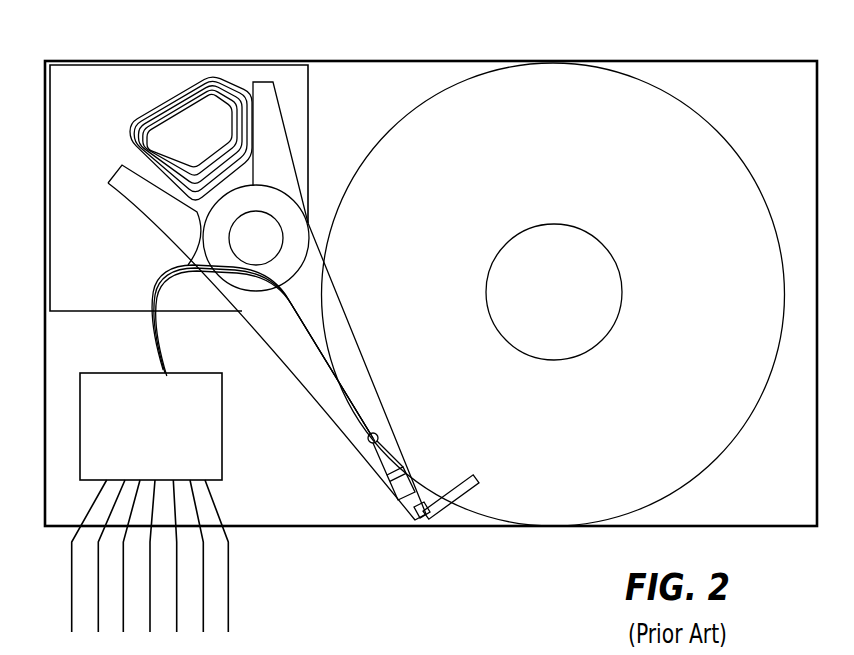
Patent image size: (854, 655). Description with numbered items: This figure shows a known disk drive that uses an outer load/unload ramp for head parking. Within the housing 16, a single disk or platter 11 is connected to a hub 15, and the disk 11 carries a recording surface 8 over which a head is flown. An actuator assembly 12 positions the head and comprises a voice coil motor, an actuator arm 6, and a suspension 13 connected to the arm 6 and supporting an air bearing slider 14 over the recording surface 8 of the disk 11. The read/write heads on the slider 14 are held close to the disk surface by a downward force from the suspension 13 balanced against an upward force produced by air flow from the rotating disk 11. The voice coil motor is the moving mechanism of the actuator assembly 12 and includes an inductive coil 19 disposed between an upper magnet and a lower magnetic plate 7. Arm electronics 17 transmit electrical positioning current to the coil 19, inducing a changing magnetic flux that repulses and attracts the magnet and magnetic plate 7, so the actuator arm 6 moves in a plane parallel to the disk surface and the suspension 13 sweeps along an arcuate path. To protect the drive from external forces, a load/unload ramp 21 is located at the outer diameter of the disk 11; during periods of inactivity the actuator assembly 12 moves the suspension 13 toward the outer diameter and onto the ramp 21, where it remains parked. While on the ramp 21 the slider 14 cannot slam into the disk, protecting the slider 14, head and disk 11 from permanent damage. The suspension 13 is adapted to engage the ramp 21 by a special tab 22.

The actuator arm 6 is at (278, 143).
The lower magnetic plate 7 is at (91, 264).
The recording surface 8 is at (553, 294).
The disk 11 is at (727, 142).
The actuator assembly 12 is at (279, 324).
The suspension 13 is at (358, 353).
The air bearing slider 14 is at (402, 480).
The hub 15 is at (598, 273).
The housing 16 is at (645, 62).
The arm electronics 17 is at (222, 433).
The inductive coil 19 is at (158, 113).
The load/unload ramp 21 is at (475, 505).
The tab 22 is at (420, 520).